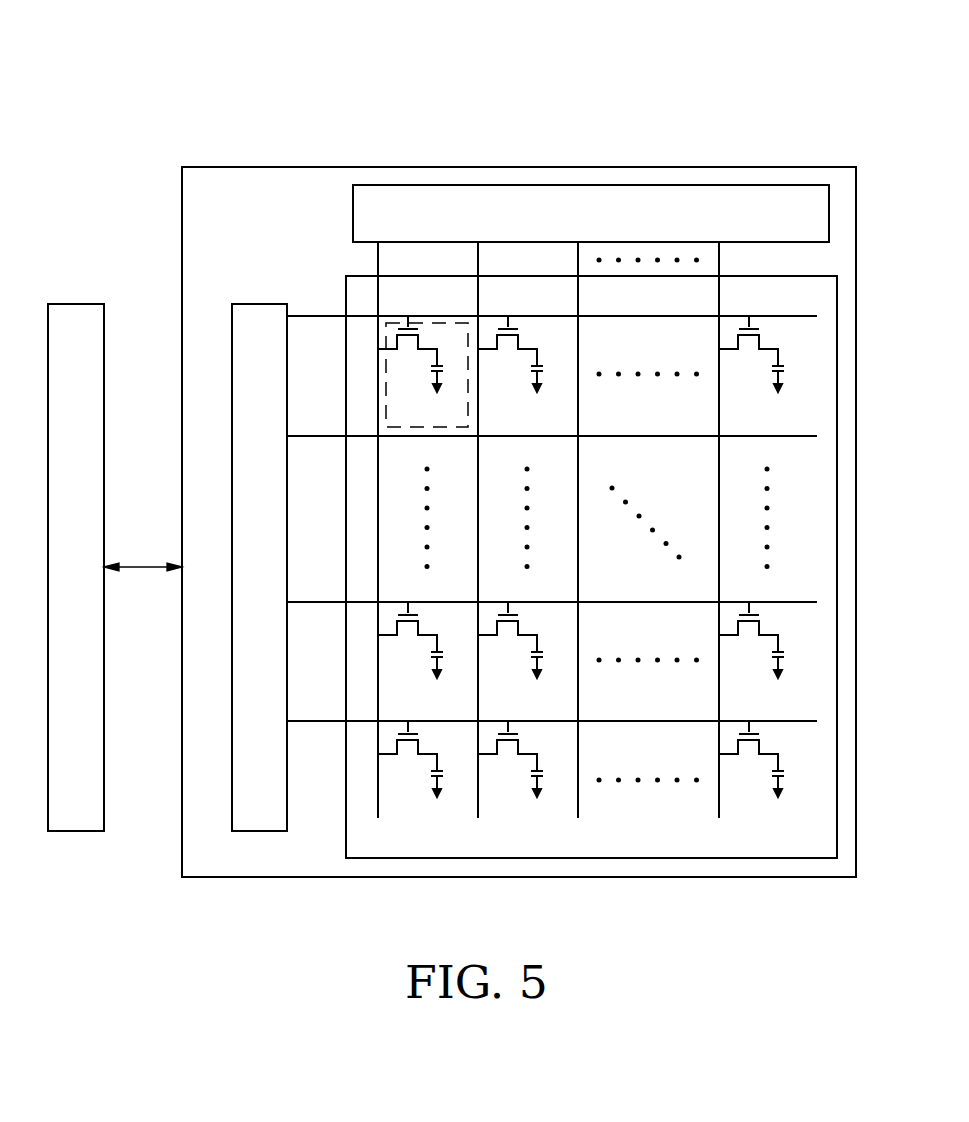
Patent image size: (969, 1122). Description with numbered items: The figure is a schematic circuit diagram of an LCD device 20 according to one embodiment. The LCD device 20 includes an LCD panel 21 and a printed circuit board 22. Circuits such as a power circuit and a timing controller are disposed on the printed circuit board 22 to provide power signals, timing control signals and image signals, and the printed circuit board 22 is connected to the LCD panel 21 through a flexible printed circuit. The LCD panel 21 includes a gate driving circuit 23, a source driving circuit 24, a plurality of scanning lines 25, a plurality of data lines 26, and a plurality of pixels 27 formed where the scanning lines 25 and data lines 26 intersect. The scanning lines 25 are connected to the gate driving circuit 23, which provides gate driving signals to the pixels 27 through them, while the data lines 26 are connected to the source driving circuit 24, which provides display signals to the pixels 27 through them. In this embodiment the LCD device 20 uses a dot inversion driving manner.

The LCD device 20 is at (536, 118).
The LCD panel 21 is at (823, 166).
The printed circuit board 22 is at (72, 304).
The gate driving circuit 23 is at (254, 304).
The source driving circuit 24 is at (760, 185).
The scanning lines 25 is at (645, 721).
The data lines 26 is at (578, 798).
The pixels 27 is at (386, 330).